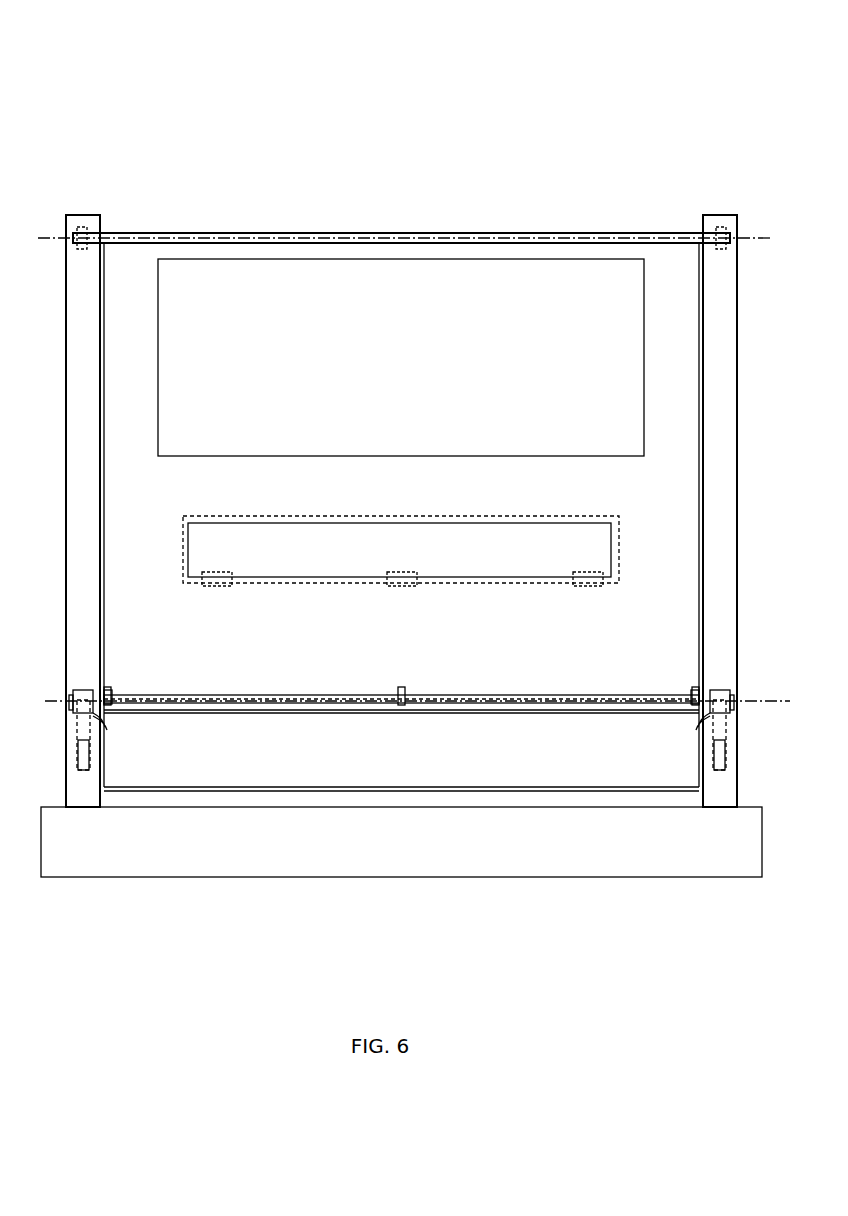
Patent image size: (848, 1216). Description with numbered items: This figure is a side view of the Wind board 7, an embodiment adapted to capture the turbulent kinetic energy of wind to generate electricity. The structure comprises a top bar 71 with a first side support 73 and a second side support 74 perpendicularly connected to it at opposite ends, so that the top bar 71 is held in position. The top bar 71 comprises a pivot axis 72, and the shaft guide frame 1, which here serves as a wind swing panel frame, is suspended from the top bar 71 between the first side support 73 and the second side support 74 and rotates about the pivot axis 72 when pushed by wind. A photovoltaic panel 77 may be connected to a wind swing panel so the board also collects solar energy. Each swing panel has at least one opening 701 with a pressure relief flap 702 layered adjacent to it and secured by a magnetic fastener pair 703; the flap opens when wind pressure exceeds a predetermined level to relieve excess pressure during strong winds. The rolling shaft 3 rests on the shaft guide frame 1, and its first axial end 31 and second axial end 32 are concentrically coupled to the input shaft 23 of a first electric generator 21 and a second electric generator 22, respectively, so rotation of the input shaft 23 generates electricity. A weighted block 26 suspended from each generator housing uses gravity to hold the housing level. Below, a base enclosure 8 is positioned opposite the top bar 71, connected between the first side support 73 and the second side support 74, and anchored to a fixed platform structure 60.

The Wind board 7 is at (566, 133).
The top bar 71 is at (410, 233).
The pivot axis 72 is at (495, 238).
The first side support 73 is at (82, 343).
The second side support 74 is at (722, 343).
The photovoltaic panel 77 is at (401, 357).
The opening 701 is at (467, 548).
The pressure relief flap 702 is at (565, 516).
The magnetic fastener pair 703 is at (215, 586).
The rolling shaft 3 is at (343, 695).
The shaft guide frame 1 is at (108, 688).
The first axial end 31 is at (109, 696).
The second axial end 32 is at (694, 696).
The first electric generator 21 is at (80, 692).
The second electric generator 22 is at (733, 692).
The input shaft 23 is at (92, 690).
The weighted block 26 is at (82, 752).
The base enclosure 8 is at (403, 760).
The fixed platform structure 60 is at (627, 853).